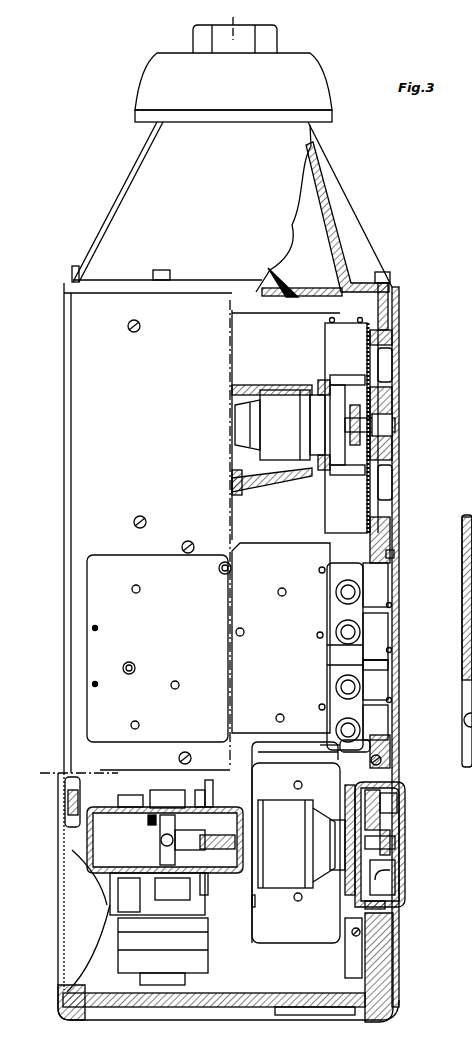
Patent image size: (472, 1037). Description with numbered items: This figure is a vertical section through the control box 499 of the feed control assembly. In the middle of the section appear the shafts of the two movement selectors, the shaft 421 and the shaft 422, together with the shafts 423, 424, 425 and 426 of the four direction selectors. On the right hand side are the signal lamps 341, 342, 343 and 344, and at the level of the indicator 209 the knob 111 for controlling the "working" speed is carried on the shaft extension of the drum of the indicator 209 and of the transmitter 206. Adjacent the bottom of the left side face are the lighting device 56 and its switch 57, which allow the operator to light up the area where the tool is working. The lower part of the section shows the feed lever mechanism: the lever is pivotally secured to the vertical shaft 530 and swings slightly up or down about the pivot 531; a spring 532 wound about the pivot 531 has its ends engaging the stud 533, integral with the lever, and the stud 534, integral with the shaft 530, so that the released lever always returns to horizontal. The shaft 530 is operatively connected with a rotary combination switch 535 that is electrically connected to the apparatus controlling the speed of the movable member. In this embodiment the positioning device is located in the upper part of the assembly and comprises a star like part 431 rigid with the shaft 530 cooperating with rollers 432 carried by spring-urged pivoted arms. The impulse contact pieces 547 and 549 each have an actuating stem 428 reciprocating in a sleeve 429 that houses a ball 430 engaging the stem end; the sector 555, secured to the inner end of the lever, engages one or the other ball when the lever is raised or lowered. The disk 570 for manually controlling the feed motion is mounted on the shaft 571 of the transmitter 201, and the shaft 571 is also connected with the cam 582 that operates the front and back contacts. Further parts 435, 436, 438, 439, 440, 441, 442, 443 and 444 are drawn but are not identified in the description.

The lighting device 56 is at (82, 862).
The switch 57 is at (463, 603).
The knob 111 is at (392, 400).
The transmitter 201 is at (265, 802).
The transmitter 206 is at (270, 405).
The indicator 209 is at (340, 537).
The signal lamp 341 is at (356, 590).
The signal lamp 342 is at (356, 632).
The signal lamp 343 is at (356, 685).
The signal lamp 344 is at (358, 728).
The shaft of movement selector 421 is at (140, 588).
The shaft of movement selector 422 is at (278, 716).
The shaft of direction selector 423 is at (282, 596).
The shaft of direction selector 424 is at (242, 635).
The shaft of direction selector 425 is at (177, 683).
The shaft of direction selector 426 is at (138, 723).
The actuating stem 428 is at (215, 812).
The sleeve 429 is at (168, 876).
The ball 430 is at (218, 870).
The star like part 431 is at (172, 800).
The rollers 432 is at (133, 800).
The contact member 435 is at (398, 890).
The insulating spacer 436 is at (400, 908).
The partition plate 438 is at (348, 832).
The panel hole 439 is at (325, 765).
The lens mount ring 440 is at (320, 465).
The socket bar 441 is at (326, 647).
The socket bar 442 is at (340, 668).
The socket spacer 443 is at (386, 667).
The retaining screw 444 is at (396, 555).
The box 499 is at (392, 535).
The vertical shaft 530 is at (152, 838).
The pivot 531 is at (158, 890).
The spring 532 is at (158, 824).
The stud 533 is at (158, 868).
The stud 534 is at (182, 836).
The rotary combination switch 535 is at (208, 945).
The electric impulse contact piece 547 is at (212, 790).
The electric impulse contact piece 549 is at (252, 900).
The sector 555 is at (262, 806).
The disk 570 is at (400, 806).
The shaft 571 is at (402, 833).
The cam 582 is at (395, 786).